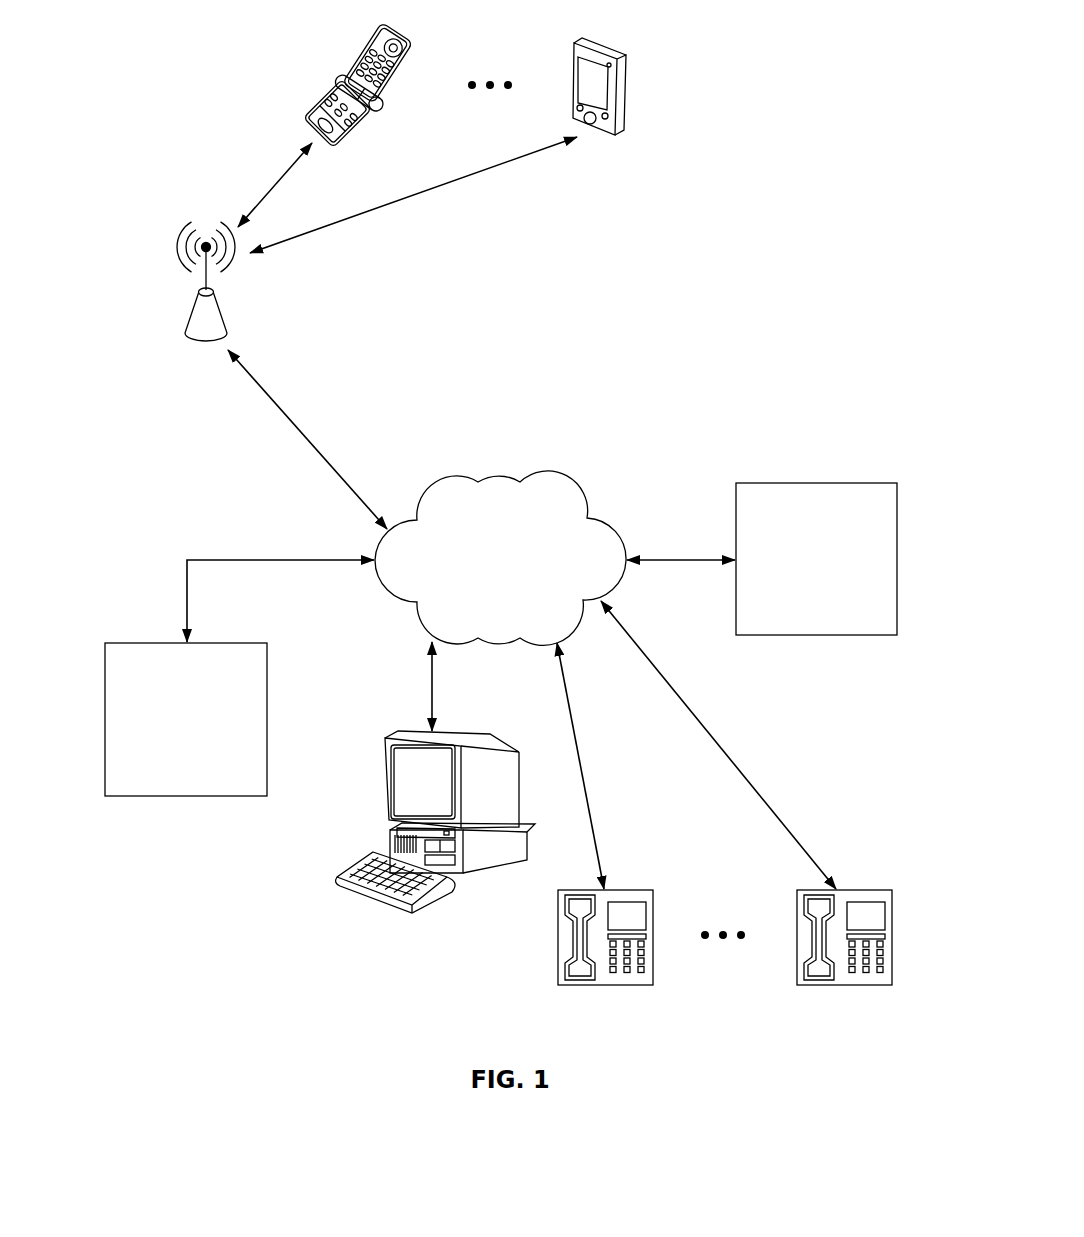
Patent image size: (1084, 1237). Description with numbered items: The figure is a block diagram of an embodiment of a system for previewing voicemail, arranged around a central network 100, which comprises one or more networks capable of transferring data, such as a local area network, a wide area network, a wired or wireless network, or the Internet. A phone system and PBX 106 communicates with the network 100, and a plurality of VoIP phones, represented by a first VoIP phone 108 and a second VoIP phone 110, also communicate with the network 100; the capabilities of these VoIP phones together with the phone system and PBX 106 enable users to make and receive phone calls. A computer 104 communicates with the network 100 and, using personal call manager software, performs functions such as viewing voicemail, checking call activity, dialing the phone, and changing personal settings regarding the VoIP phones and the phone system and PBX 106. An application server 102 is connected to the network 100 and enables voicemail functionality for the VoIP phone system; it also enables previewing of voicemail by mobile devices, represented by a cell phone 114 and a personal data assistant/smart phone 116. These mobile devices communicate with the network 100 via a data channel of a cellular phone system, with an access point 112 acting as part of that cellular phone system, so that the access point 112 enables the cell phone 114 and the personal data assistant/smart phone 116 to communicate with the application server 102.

The network 100 is at (436, 483).
The application server 102 is at (167, 643).
The computer 104 is at (463, 735).
The phone system and PBX 106 is at (796, 483).
The VoIP phone 108 is at (628, 890).
The VoIP phone 110 is at (852, 890).
The access point 112 is at (189, 314).
The cell phone 114 is at (380, 44).
The personal data assistant/smart phone 116 is at (587, 43).